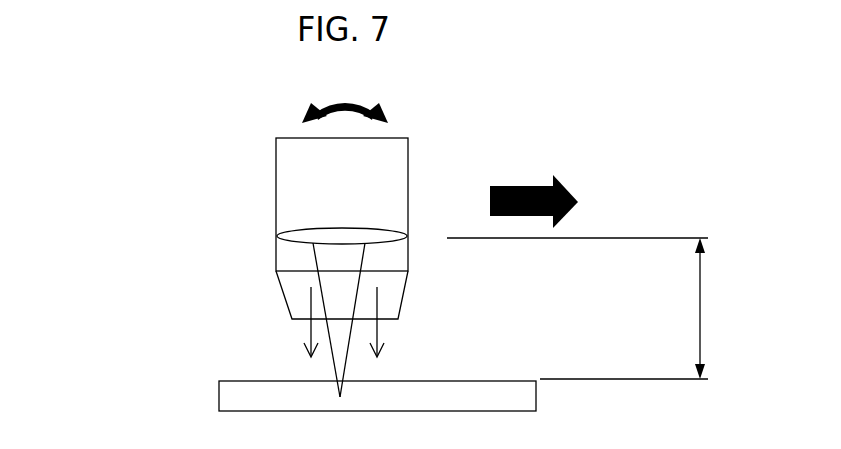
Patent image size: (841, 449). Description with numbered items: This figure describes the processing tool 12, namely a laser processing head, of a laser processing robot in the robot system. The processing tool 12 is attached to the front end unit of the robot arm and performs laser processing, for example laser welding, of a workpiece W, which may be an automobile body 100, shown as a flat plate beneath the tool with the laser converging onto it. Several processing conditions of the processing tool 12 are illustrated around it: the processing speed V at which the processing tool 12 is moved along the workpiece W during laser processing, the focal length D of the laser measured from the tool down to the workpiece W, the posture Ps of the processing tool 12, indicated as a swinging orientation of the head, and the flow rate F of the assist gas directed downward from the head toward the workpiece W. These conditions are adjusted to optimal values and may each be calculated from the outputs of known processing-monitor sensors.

The processing tool 12 is at (240, 186).
The workpiece W is at (283, 392).
The automobile body 100 is at (227, 398).
The posture of the processing tool Ps is at (345, 99).
The processing speed V is at (534, 195).
The flow rate of the assist gas F is at (353, 322).
The focal length of laser D is at (584, 308).